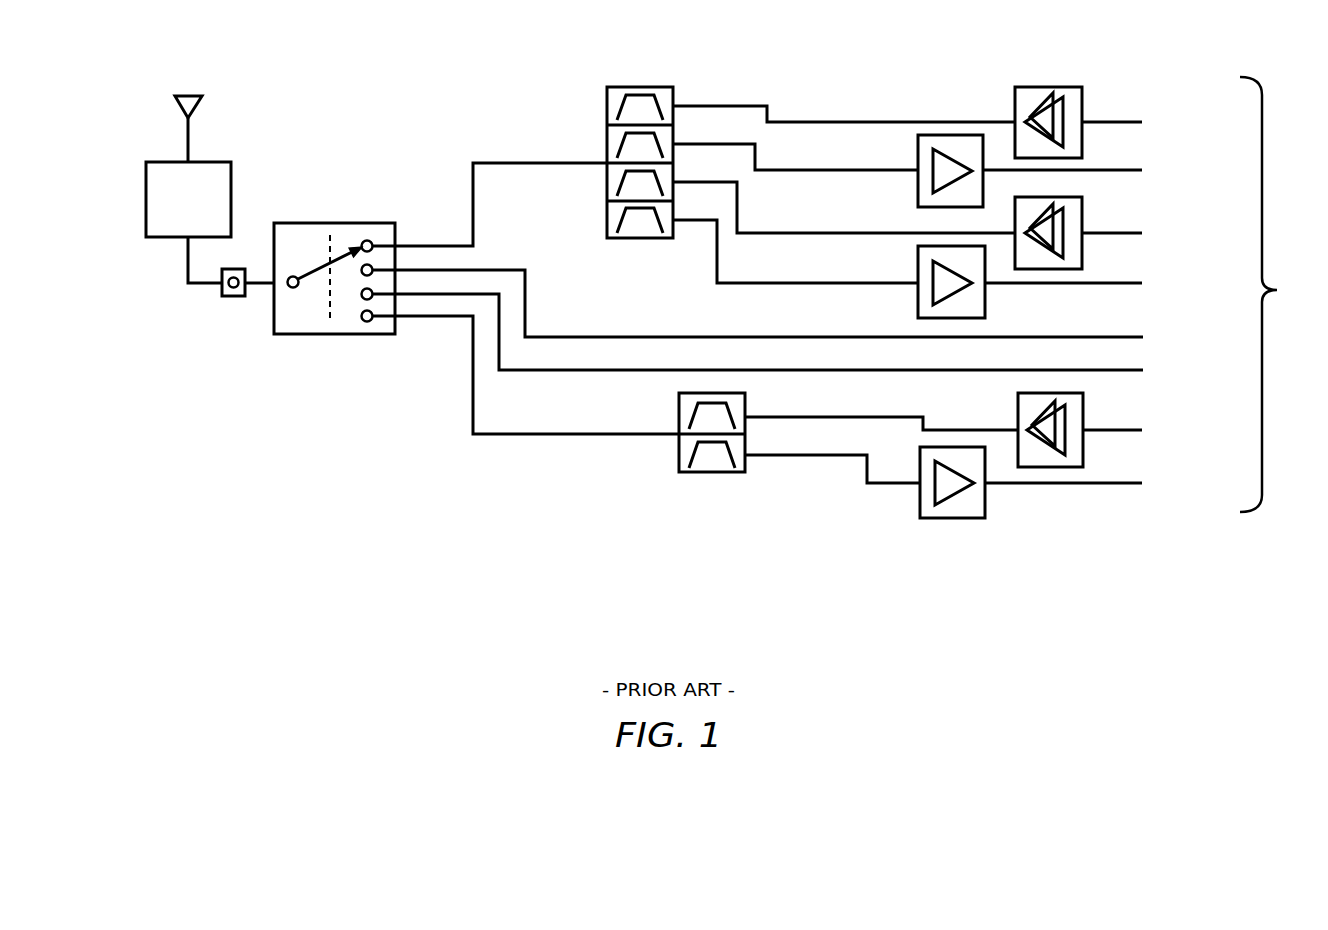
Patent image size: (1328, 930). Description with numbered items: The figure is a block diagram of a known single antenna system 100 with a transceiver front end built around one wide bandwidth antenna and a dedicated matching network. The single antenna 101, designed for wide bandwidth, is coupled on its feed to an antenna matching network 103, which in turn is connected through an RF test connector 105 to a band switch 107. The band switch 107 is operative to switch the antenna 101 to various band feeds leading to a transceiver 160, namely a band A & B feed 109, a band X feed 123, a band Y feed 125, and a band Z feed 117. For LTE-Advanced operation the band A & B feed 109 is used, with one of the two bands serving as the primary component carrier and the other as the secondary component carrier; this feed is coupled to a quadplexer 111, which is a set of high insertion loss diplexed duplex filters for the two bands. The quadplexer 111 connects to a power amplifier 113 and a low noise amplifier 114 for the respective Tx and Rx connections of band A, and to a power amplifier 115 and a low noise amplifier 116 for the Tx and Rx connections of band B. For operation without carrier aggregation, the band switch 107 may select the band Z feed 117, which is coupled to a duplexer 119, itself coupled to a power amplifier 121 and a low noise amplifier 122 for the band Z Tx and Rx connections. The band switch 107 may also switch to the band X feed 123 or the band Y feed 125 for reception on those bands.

The single antenna system 100 is at (1183, 35).
The antenna 101 is at (178, 103).
The antenna matching network 103 is at (231, 180).
The RF test connector 105 is at (235, 268).
The band switch 107 is at (345, 220).
The band A & B feed 109 is at (476, 206).
The quadplexer 111 is at (661, 85).
The power amplifier 113 is at (1082, 98).
The low noise amplifier 114 is at (918, 156).
The power amplifier 115 is at (1082, 208).
The low noise amplifier 116 is at (918, 266).
The band Z feed 117 is at (476, 407).
The duplexer 119 is at (748, 403).
The power amplifier 121 is at (1084, 410).
The low noise amplifier 122 is at (920, 453).
The band X feed 123 is at (690, 336).
The band Y feed 125 is at (690, 368).
The transceiver 160 is at (1229, 294).